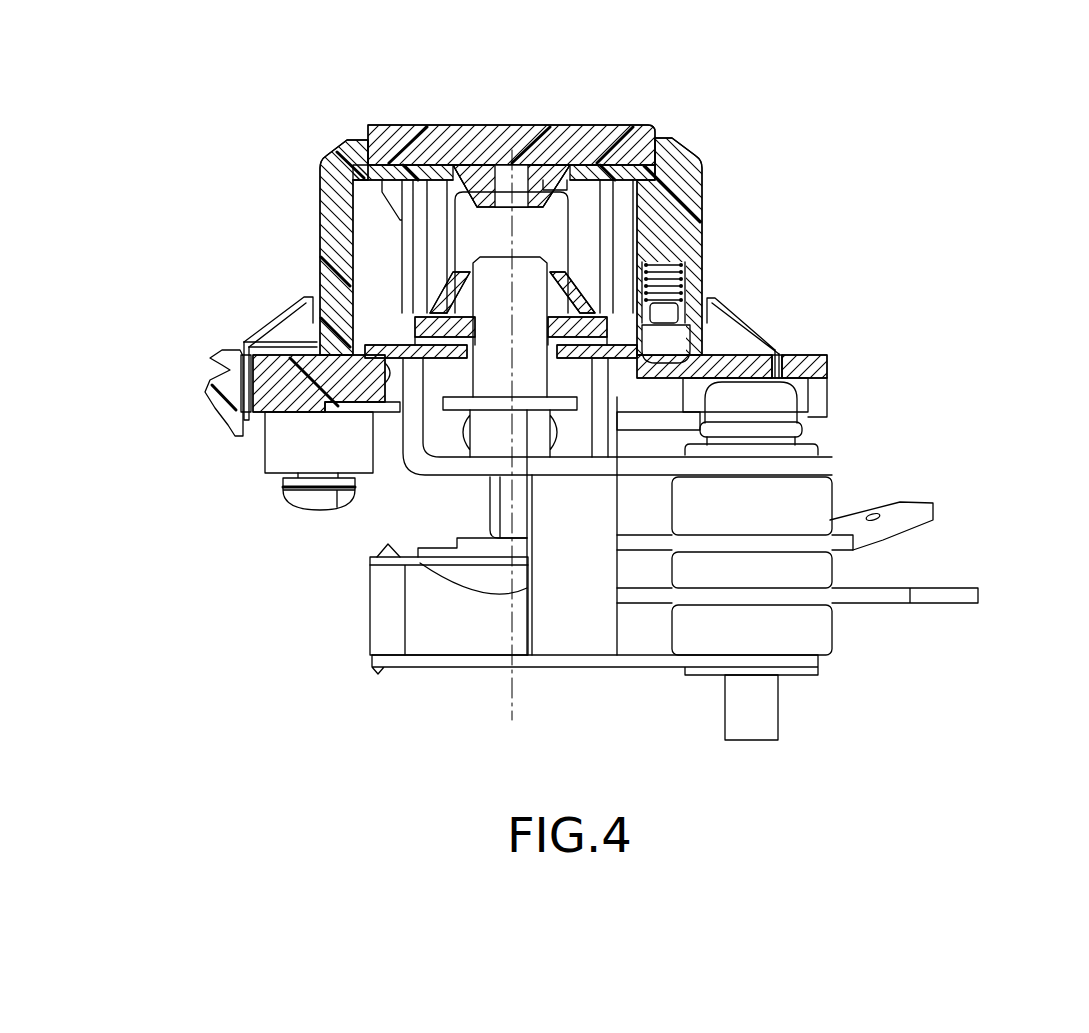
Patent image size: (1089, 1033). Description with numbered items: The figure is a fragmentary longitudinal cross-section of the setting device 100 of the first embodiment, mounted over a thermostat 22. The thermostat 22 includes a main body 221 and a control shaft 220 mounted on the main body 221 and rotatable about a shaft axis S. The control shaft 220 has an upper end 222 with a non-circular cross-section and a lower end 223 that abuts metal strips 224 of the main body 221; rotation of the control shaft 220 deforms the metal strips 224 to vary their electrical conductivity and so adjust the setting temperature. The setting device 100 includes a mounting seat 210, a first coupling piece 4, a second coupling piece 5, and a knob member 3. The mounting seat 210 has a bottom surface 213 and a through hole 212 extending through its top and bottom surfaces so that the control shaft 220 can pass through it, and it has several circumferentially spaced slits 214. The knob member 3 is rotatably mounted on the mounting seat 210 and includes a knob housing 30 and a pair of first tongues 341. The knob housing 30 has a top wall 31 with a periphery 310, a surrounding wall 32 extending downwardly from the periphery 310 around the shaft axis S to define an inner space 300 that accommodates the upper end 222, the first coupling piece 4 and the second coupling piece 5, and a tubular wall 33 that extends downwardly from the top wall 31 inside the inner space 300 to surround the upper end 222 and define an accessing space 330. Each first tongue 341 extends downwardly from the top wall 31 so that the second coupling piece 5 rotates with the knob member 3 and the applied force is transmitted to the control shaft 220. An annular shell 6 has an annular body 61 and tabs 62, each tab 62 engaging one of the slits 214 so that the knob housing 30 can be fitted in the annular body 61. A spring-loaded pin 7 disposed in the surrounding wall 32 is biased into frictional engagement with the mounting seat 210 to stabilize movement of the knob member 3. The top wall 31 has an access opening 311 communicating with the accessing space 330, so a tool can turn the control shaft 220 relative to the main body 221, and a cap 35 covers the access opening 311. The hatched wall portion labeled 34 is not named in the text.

The setting device 100 is at (276, 141).
The knob member 3 is at (697, 122).
The knob housing 30 is at (708, 205).
The top wall 31 is at (397, 170).
The surrounding wall 32 is at (333, 186).
The tubular wall 33 is at (455, 230).
The right housing wall 34 is at (703, 223).
The cap 35 is at (490, 157).
The inner space 300 is at (366, 200).
The periphery 310 is at (352, 172).
The access opening 311 is at (545, 178).
The accessing space 330 is at (540, 237).
The first tongues 341 is at (313, 296).
The first coupling piece 4 is at (688, 286).
The spring-loaded pin 7 is at (668, 342).
The mounting seat 210 is at (827, 357).
The through hole 212 is at (375, 402).
The bottom surface 213 is at (803, 422).
The slits 214 is at (243, 360).
The annular shell 6 is at (240, 340).
The annular body 61 is at (302, 312).
The tabs 62 is at (243, 400).
The thermostat 22 is at (975, 575).
The control shaft 220 is at (487, 372).
The main body 221 is at (858, 567).
The upper end 222 is at (490, 284).
The lower end 223 is at (500, 507).
The metal strips 224 is at (852, 547).
The second coupling piece 5 is at (573, 362).
The shaft axis S is at (508, 683).